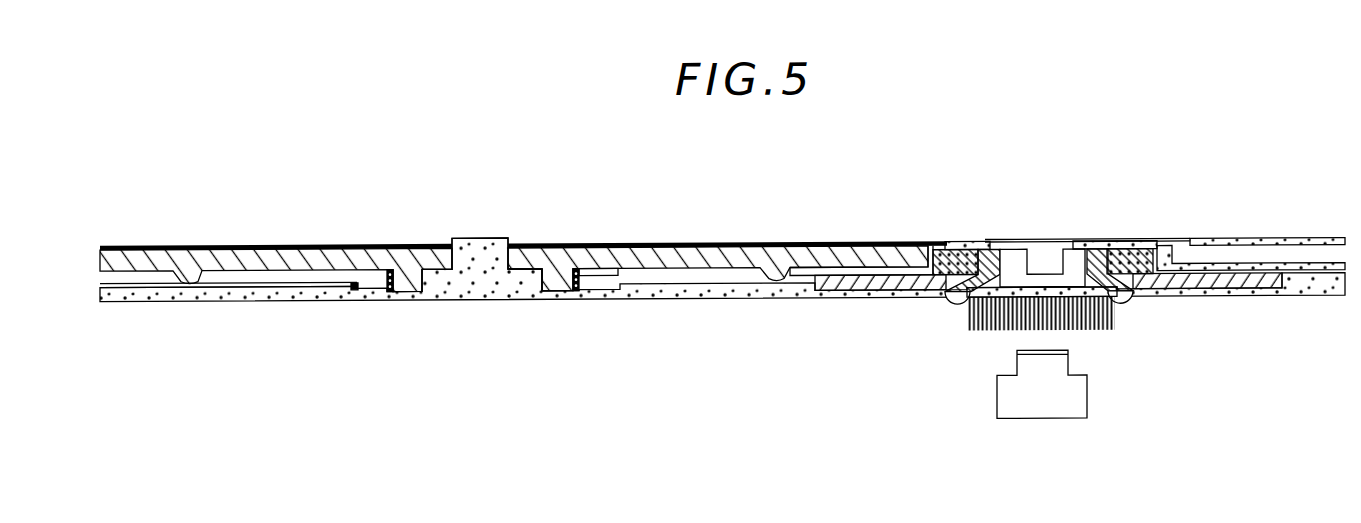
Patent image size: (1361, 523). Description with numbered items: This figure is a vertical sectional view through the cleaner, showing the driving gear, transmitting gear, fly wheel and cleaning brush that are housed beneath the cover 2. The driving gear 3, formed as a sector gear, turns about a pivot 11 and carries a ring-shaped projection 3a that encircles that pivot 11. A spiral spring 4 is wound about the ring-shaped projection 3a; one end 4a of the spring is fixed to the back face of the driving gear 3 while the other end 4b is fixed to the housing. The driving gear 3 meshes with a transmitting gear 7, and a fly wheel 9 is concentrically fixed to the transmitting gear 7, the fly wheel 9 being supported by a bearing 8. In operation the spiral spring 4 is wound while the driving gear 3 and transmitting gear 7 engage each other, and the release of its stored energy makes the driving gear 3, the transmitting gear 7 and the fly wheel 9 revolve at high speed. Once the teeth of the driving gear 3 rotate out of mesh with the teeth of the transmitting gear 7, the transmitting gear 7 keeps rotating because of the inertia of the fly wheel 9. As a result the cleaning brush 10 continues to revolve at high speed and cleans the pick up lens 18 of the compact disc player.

The cover 2 is at (341, 246).
The driving gear 3 is at (680, 246).
The ring-shaped projection 3a is at (403, 247).
The spiral spring 4 is at (566, 246).
The one end of the spring 4a is at (614, 268).
The other end of the spring 4b is at (352, 299).
The transmitting gear 7 is at (1128, 262).
The bearing 8 is at (1019, 262).
The fly wheel 9 is at (1226, 292).
The cleaning brush 10 is at (970, 334).
The pivot 11 is at (489, 236).
The pick up lens 18 is at (1050, 402).